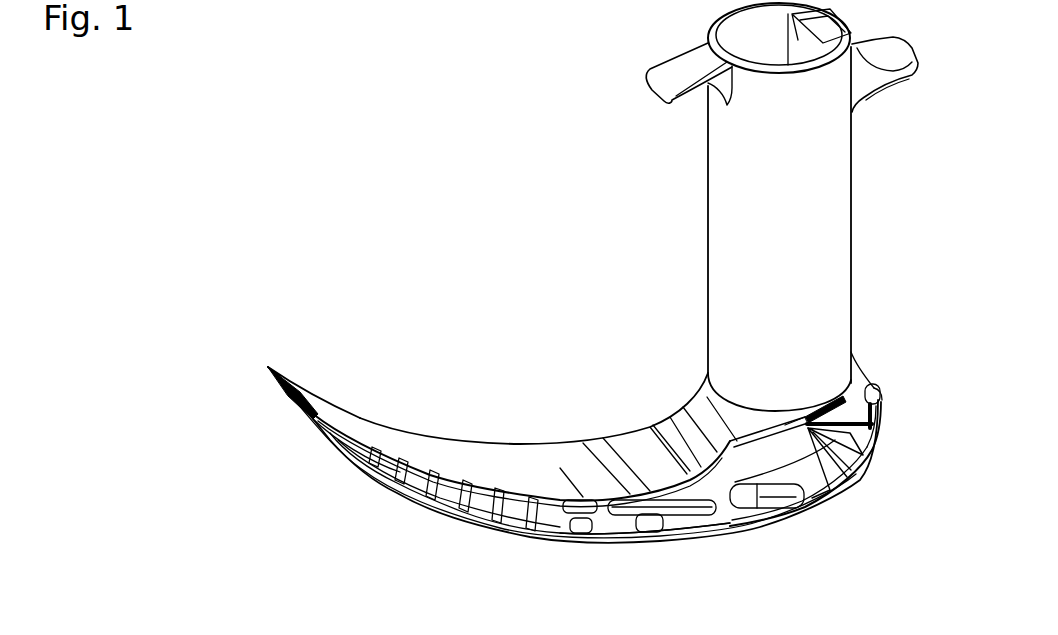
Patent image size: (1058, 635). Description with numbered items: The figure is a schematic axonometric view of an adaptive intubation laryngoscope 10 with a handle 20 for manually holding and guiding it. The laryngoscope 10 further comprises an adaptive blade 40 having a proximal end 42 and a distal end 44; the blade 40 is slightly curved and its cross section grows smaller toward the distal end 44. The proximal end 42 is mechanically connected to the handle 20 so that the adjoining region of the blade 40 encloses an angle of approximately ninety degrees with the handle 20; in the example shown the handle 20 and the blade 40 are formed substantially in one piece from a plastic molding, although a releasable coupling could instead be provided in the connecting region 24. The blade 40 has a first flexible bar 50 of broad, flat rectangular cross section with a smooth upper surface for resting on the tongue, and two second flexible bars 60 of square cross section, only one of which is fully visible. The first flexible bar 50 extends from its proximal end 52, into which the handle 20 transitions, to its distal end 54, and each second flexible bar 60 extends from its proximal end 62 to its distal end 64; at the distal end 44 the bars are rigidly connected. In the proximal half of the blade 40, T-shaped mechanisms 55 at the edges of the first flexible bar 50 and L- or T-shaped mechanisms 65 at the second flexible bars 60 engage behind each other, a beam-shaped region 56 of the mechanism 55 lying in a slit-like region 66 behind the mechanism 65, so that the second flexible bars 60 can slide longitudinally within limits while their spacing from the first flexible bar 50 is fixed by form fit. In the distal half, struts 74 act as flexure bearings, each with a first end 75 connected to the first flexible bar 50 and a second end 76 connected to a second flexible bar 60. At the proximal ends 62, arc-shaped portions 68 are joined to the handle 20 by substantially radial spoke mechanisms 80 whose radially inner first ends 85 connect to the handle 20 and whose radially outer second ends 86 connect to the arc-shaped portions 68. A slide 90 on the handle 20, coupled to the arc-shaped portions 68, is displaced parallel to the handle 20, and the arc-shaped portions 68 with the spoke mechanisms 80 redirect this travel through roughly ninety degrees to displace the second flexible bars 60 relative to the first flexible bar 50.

The intubation laryngoscope 10 is at (341, 58).
The handle 20 is at (741, 198).
The slide 90 is at (893, 78).
The connecting region 24 is at (827, 403).
The adaptive blade 40 is at (528, 460).
The proximal end of the adaptive blade 42 is at (677, 447).
The distal end of the adaptive blade 44 is at (289, 378).
The first flexible bar 50 is at (400, 432).
The proximal end of the first flexible bar 52 is at (707, 485).
The distal end of the first flexible bar 54 is at (302, 389).
The T-shaped mechanism 55 is at (592, 548).
The beam-shaped region 56 is at (603, 523).
The second flexible bar 60 is at (400, 493).
The proximal end of the second flexible bar 62 is at (878, 400).
The distal end of the second flexible bar 64 is at (318, 418).
The T-shaped mechanism 65 is at (673, 515).
The slit-like region 66 is at (628, 528).
The arc-shaped portion 68 is at (874, 421).
The strut 74 is at (490, 502).
The first end of strut 75 is at (493, 492).
The second end of strut 76 is at (492, 523).
The spoke mechanism 80 is at (849, 432).
The first end of the spoke mechanism 85 is at (838, 455).
The second end of the spoke mechanism 86 is at (876, 432).